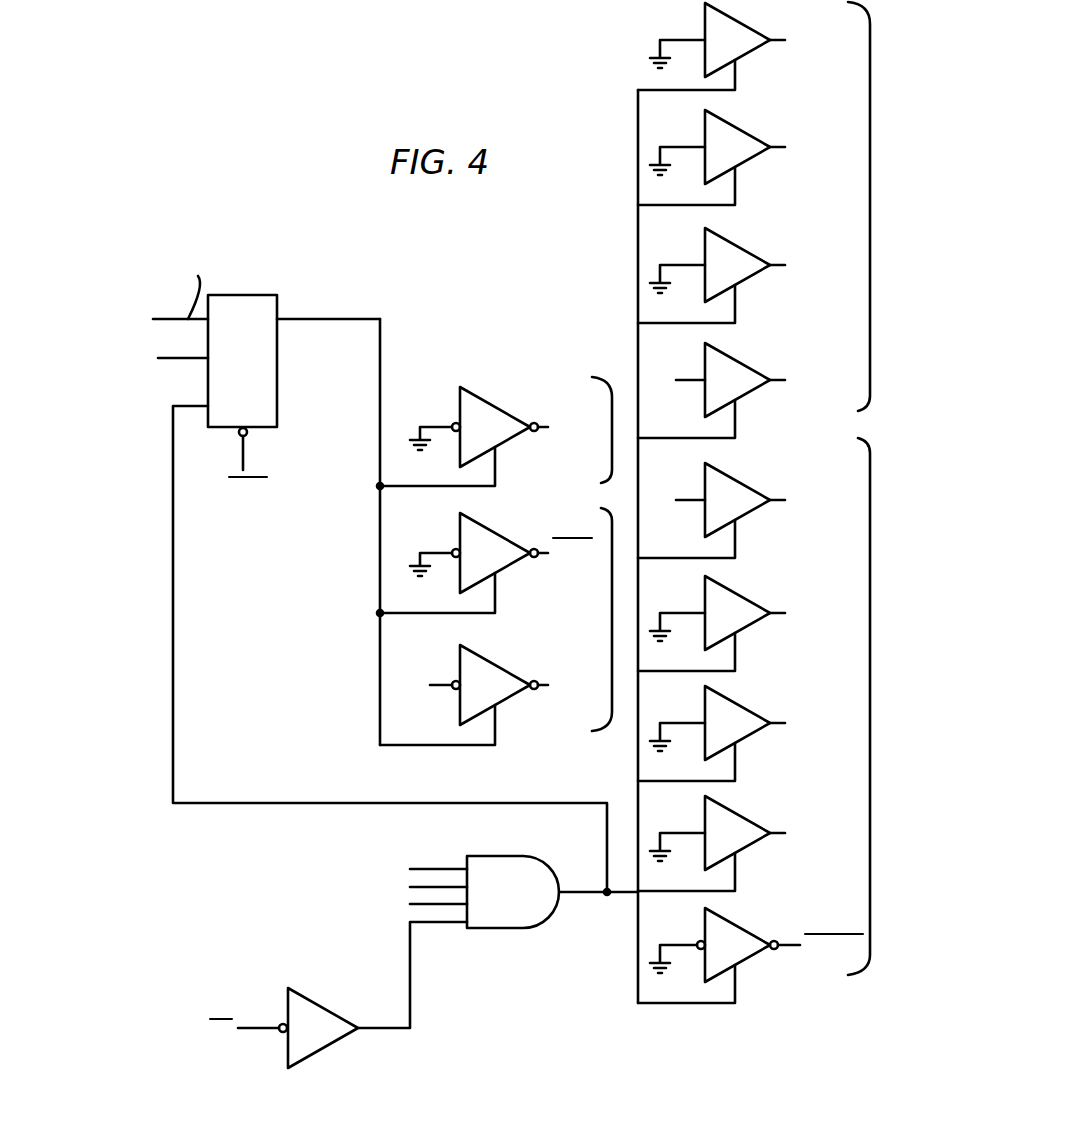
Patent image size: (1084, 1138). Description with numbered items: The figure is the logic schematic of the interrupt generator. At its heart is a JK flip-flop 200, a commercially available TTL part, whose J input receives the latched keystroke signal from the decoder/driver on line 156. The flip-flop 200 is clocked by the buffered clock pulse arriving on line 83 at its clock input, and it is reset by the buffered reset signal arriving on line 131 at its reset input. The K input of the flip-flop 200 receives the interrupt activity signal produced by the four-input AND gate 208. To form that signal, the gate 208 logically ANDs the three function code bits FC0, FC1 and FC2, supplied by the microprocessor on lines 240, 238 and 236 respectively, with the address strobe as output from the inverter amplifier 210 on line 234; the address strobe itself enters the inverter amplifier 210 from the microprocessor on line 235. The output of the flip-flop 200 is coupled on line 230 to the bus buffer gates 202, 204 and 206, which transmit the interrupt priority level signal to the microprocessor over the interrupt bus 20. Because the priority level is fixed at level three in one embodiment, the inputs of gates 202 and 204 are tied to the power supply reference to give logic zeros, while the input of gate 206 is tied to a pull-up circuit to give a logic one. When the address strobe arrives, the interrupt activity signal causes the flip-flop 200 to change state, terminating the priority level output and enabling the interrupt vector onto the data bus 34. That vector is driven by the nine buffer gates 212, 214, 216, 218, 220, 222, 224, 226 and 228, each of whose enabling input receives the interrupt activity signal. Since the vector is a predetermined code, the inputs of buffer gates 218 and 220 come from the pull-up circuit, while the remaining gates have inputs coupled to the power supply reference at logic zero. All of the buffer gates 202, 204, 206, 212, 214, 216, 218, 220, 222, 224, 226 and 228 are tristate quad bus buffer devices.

The interrupt bus 20 is at (602, 554).
The data bus 34 is at (754, 502).
The clock pulse line 83 is at (165, 358).
The reset signal line 131 is at (243, 450).
The latched keystroke signal line 156 is at (159, 319).
The JK flip-flop 200 is at (261, 295).
The bus buffer gate 202 is at (503, 438).
The bus buffer gate 204 is at (503, 564).
The bus buffer gate 206 is at (503, 696).
The AND gate 208 is at (521, 903).
The inverter amplifier 210 is at (331, 1039).
The buffer gate 212 is at (747, 51).
The buffer gate 214 is at (747, 158).
The buffer gate 216 is at (747, 276).
The buffer gate 218 is at (747, 391).
The buffer gate 220 is at (747, 511).
The buffer gate 222 is at (747, 624).
The buffer gate 224 is at (747, 734).
The buffer gate 226 is at (747, 844).
The buffer gate 228 is at (747, 956).
The flip-flop output line 230 is at (382, 350).
The address strobe output line 234 is at (410, 1000).
The address strobe input line 235 is at (243, 1030).
The function code line FC2 236 is at (418, 906).
The function code line FC1 238 is at (451, 887).
The function code line FC0 240 is at (422, 869).